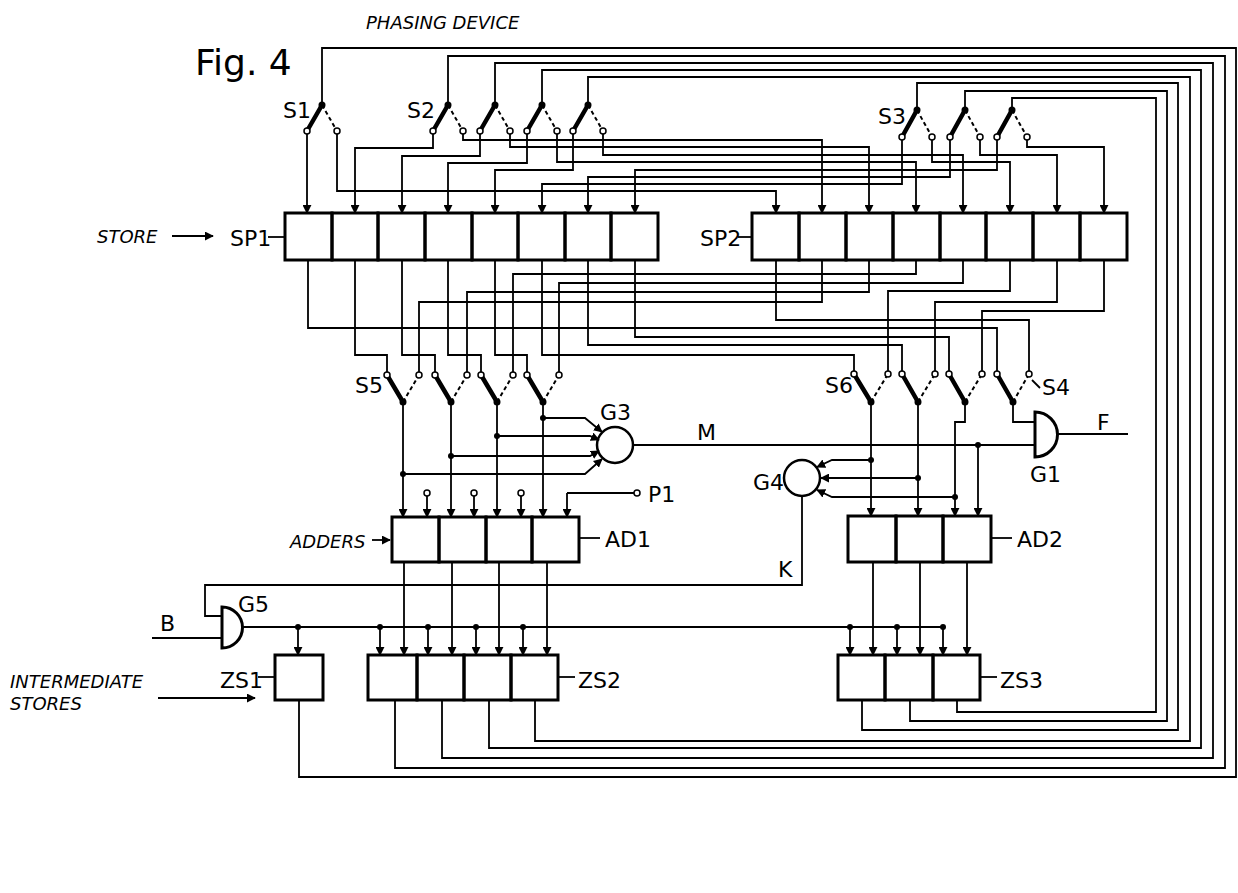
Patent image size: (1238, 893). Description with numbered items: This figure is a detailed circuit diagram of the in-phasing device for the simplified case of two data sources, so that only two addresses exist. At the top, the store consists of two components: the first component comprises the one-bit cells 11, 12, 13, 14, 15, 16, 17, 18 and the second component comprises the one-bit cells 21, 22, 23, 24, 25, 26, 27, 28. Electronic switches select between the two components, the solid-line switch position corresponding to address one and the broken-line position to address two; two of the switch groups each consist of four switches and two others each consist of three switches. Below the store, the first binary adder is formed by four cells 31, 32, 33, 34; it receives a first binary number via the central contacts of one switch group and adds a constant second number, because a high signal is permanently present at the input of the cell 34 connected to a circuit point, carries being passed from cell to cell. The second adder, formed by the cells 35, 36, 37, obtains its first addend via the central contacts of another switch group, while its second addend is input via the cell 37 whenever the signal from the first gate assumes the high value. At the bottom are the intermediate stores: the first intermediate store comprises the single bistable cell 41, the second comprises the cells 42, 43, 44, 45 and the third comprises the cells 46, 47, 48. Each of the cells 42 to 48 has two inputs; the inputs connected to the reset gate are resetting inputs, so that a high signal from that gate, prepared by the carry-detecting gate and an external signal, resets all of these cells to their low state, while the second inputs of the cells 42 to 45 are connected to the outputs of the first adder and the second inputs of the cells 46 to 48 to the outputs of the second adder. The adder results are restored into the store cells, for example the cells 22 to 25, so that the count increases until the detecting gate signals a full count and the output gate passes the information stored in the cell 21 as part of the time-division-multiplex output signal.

The cell 11 is at (308, 236).
The cell 12 is at (355, 236).
The cell 13 is at (401, 236).
The cell 14 is at (448, 236).
The cell 15 is at (495, 236).
The cell 16 is at (541, 236).
The cell 17 is at (588, 236).
The cell 18 is at (634, 236).
The cell 21 is at (775, 236).
The cell 22 is at (822, 236).
The cell 23 is at (869, 236).
The cell 24 is at (916, 236).
The cell 25 is at (963, 236).
The cell 26 is at (1009, 236).
The cell 27 is at (1056, 236).
The cell 28 is at (1103, 236).
The cell 31 is at (415, 539).
The cell 32 is at (462, 539).
The cell 33 is at (509, 539).
The cell 34 is at (555, 539).
The cell 35 is at (872, 539).
The cell 36 is at (919, 539).
The cell 37 is at (967, 539).
The cell 41 is at (299, 677).
The cell 42 is at (392, 677).
The cell 43 is at (440, 677).
The cell 44 is at (487, 677).
The cell 45 is at (534, 677).
The cell 46 is at (861, 677).
The cell 47 is at (909, 677).
The cell 48 is at (956, 677).